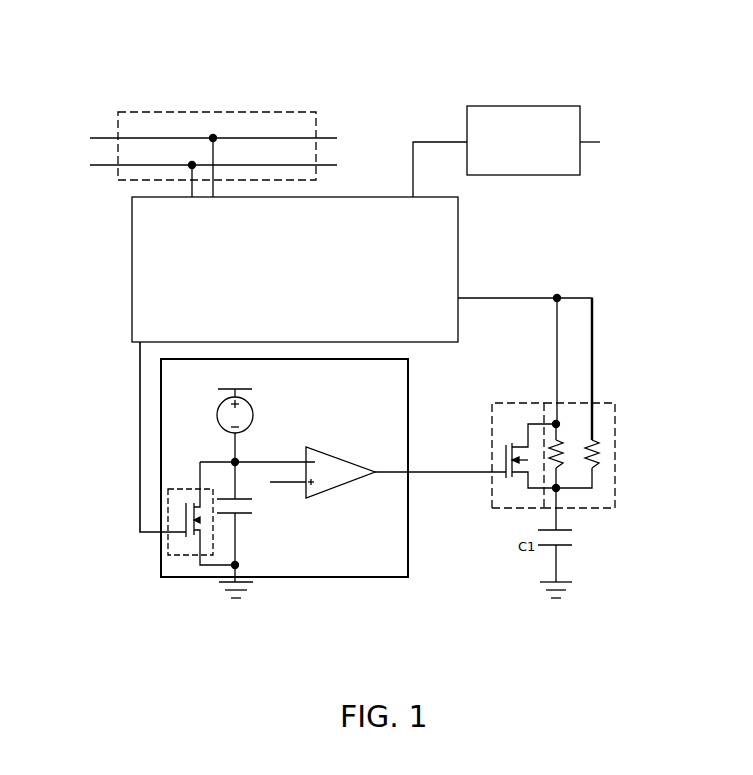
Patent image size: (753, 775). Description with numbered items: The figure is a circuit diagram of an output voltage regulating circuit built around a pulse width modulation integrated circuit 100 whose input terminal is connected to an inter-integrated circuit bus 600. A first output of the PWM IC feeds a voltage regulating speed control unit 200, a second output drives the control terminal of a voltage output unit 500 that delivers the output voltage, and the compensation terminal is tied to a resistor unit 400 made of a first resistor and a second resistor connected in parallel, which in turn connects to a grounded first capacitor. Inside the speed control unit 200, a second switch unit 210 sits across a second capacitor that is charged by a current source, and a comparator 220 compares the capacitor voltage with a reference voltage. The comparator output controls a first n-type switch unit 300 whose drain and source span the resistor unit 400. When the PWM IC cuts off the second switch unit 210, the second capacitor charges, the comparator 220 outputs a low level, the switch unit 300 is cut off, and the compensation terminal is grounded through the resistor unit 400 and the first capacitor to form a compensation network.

The pulse width modulation integrated circuit 100 is at (132, 322).
The voltage regulating speed control unit 200 is at (273, 516).
The second switch unit 210 is at (187, 555).
The comparator 220 is at (335, 488).
The first n-type switch unit 300 is at (510, 508).
The resistor unit 400 is at (598, 508).
The voltage output unit 500 is at (515, 106).
The inter-integrated circuit bus 600 is at (277, 112).